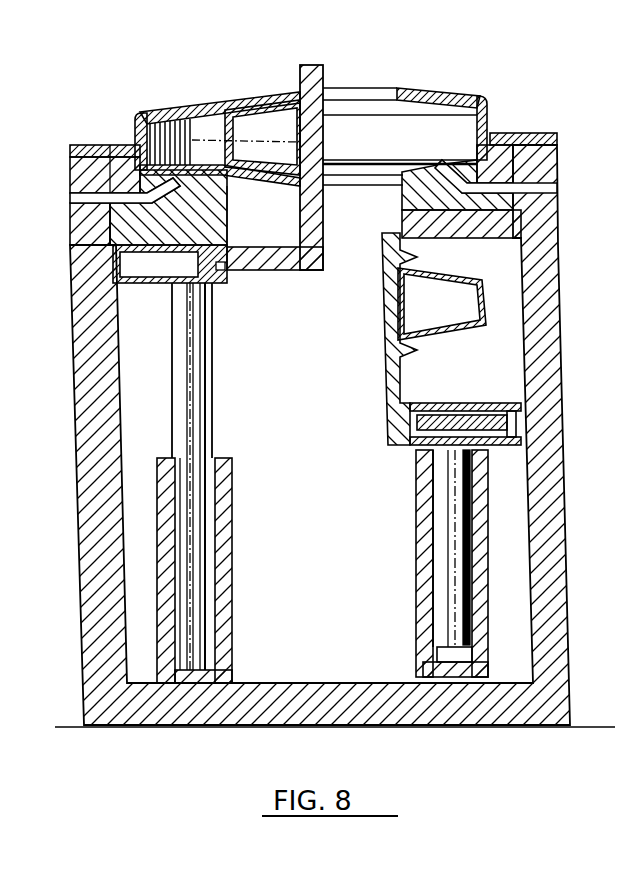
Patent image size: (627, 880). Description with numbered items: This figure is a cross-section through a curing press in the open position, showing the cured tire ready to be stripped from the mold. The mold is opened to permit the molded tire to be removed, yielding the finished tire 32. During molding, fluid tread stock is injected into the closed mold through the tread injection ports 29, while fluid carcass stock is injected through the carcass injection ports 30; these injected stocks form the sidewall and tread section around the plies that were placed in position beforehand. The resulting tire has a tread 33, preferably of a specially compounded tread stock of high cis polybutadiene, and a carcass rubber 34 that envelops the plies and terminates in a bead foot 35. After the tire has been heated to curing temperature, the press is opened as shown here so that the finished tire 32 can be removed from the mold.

The tread injection ports 29 is at (76, 155).
The carcass injection ports 30 is at (78, 200).
The finished tire 32 is at (175, 106).
The tread 33 is at (137, 120).
The carcass rubber 34 is at (448, 96).
The bead foot 35 is at (232, 96).